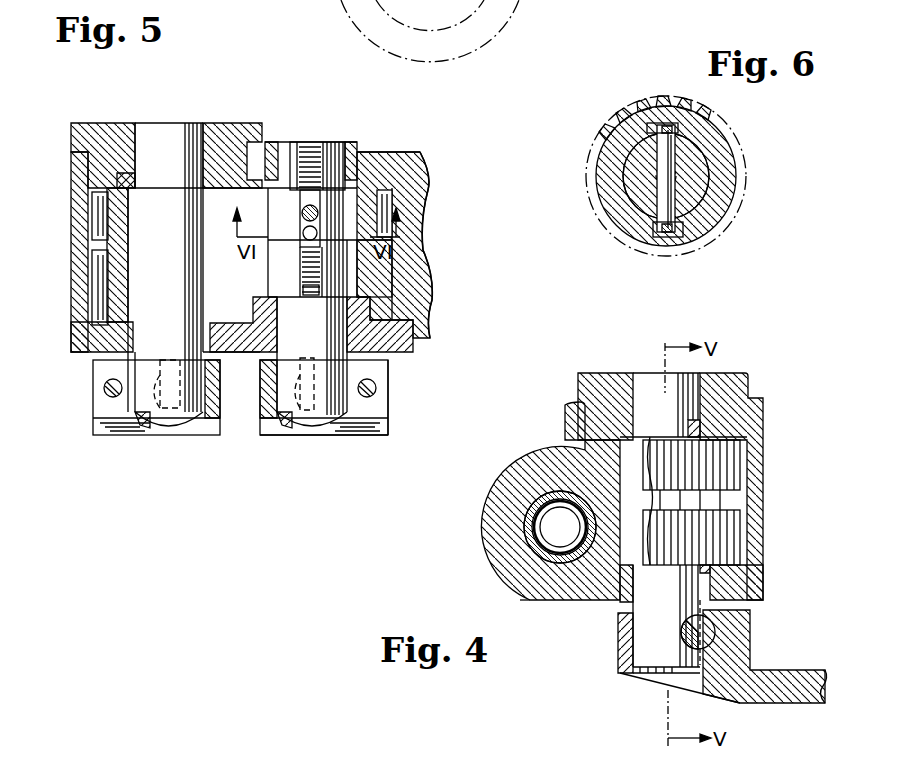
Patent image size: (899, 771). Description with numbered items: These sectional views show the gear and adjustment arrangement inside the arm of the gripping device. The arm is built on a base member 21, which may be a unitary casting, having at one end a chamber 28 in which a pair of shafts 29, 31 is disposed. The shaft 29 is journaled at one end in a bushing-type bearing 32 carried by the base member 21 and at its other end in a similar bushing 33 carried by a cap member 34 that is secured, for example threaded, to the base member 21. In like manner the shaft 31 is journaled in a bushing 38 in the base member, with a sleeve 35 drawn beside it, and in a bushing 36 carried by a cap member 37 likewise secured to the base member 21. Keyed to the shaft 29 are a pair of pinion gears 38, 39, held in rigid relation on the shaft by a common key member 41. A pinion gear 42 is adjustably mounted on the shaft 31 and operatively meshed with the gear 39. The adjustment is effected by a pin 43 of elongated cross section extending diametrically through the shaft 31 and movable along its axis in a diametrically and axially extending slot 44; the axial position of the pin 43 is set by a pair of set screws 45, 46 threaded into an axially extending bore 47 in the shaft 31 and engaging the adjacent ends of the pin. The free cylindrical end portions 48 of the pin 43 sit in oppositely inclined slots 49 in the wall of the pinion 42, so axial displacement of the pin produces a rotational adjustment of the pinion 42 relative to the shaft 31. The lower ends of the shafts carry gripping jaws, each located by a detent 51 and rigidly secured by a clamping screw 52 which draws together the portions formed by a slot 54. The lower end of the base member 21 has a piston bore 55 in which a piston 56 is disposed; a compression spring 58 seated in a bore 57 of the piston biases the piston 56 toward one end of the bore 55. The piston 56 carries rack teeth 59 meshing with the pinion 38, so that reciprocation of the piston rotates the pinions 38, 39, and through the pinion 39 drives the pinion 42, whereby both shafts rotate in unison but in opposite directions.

In FIG. 5, the base member 21 is at (432, 318).
In FIG. 5, the chamber 28 is at (392, 268).
In FIG. 5, the shaft 29 is at (136, 203).
In FIG. 5, the shaft 31 is at (358, 176).
In FIG. 5, the bushing-type bearing 32 is at (127, 347).
In FIG. 5, the bushing 33 is at (212, 130).
In FIG. 5, the cap member 34 is at (100, 125).
In FIG. 5, the sleeve 35 is at (352, 142).
In FIG. 5, the bushing 36 is at (378, 347).
In FIG. 5, the cap member 37 is at (243, 352).
In FIG. 5, the pinion gear 38 is at (111, 297).
In FIG. 4, the pinion gear 38 is at (735, 538).
In FIG. 5, the pinion gear 39 is at (110, 235).
In FIG. 4, the pinion gear 39 is at (735, 458).
In FIG. 5, the key member 41 is at (277, 162).
In FIG. 5, the pinion gear 42 is at (386, 195).
In FIG. 6, the pin 43 is at (668, 147).
In FIG. 5, the slot 44 is at (302, 212).
In FIG. 6, the slot 44 is at (673, 205).
In FIG. 5, the set screw 45 is at (312, 142).
In FIG. 5, the set screw 46 is at (312, 300).
In FIG. 5, the bore 47 is at (305, 270).
In FIG. 5, the cylindrical end portions 48 is at (300, 240).
In FIG. 6, the cylindrical end portions 48 is at (660, 126).
In FIG. 5, the inclined slots 49 is at (322, 262).
In FIG. 6, the inclined slots 49 is at (670, 123).
In FIG. 5, the detent ball 51 is at (307, 412).
In FIG. 4, the detent ball 51 is at (700, 632).
In FIG. 5, the clamping screw 52 is at (362, 437).
In FIG. 5, the slot 54 is at (104, 388).
In FIG. 4, the piston bore 55 is at (480, 527).
In FIG. 4, the piston 56 is at (533, 558).
In FIG. 4, the bore 57 is at (560, 572).
In FIG. 4, the compression spring 58 is at (552, 447).
In FIG. 4, the rack teeth 59 is at (607, 550).